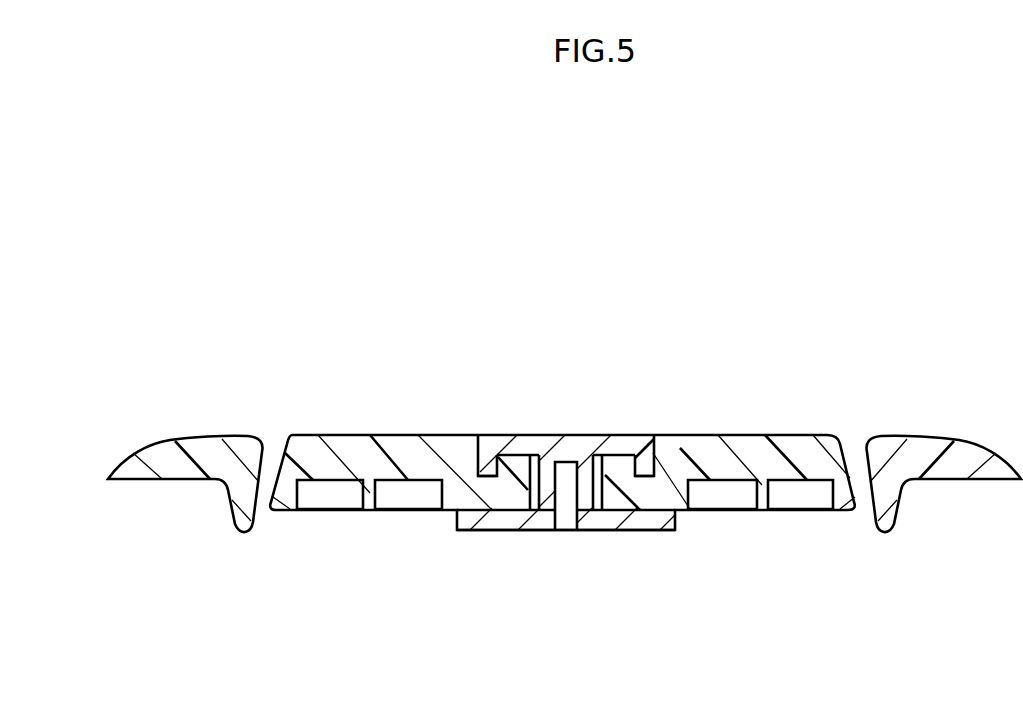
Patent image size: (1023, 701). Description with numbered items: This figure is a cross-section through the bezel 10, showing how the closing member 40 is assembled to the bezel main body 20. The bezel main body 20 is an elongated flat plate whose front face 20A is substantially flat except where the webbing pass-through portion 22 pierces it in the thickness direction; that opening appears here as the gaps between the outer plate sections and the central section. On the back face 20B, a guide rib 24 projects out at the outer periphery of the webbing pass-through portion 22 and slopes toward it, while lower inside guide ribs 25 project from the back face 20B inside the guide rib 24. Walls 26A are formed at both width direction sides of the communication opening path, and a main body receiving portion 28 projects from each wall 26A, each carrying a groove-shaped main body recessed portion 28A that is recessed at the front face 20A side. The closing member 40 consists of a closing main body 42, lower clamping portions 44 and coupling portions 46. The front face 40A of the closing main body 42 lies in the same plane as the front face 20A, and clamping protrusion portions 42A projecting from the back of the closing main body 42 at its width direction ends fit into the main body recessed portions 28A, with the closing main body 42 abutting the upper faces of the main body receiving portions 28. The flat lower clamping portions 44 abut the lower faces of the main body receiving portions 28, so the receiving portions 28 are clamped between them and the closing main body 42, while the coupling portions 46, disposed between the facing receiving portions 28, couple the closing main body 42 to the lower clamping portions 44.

The bezel 10 is at (929, 175).
The bezel main body 20 is at (748, 434).
The front face 20A is at (196, 438).
The back face 20B is at (178, 482).
The webbing pass-through portion 22 is at (276, 436).
The guide rib 24 is at (233, 510).
The inside guide ribs 25 is at (330, 512).
The walls 26A is at (490, 452).
The main body receiving portion 28 is at (536, 470).
The main body recessed portion 28A is at (488, 462).
The closing member 40 is at (581, 433).
The front face 40A is at (543, 455).
The closing main body 42 is at (612, 455).
The clamping protrusion portions 42A is at (480, 466).
The lower clamping portions 44 is at (612, 531).
The coupling portions 46 is at (553, 492).